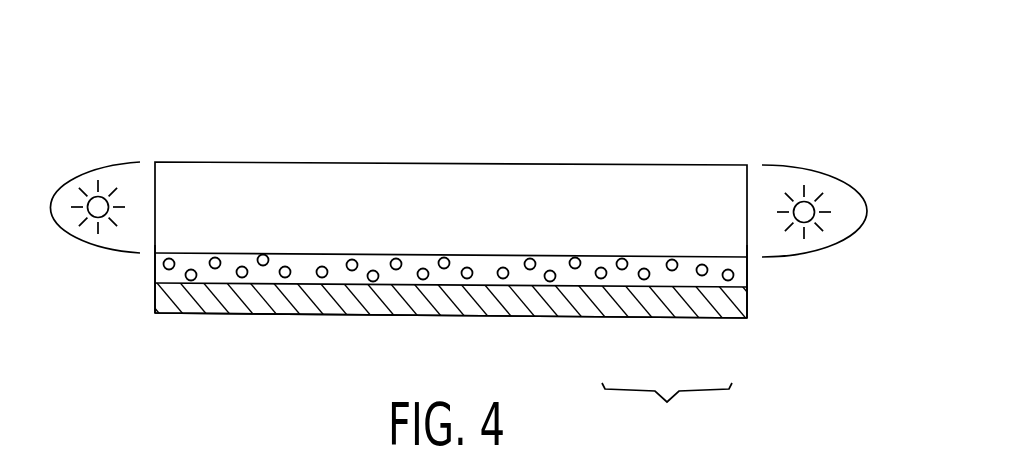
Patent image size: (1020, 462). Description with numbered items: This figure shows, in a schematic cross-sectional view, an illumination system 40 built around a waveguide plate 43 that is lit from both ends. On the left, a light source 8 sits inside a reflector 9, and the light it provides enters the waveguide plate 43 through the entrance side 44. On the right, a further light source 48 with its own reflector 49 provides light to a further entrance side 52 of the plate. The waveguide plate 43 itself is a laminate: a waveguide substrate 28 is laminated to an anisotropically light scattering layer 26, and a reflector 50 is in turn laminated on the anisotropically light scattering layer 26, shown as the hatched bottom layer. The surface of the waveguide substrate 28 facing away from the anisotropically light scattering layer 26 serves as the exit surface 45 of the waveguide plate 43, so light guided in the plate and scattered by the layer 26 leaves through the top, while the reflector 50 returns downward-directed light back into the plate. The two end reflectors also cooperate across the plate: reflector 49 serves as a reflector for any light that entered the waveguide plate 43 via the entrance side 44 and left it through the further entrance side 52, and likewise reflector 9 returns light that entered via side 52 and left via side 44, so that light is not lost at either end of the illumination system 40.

The illumination system 40 is at (122, 114).
The exit surface 45 is at (262, 161).
The entrance side 44 is at (152, 240).
The further entrance side 52 is at (749, 248).
The anisotropically light scattering layer 26 is at (672, 280).
The waveguide substrate 28 is at (716, 247).
The reflector 50 is at (623, 302).
The waveguide plate 43 is at (667, 412).
The reflector 9 is at (55, 230).
The light source 8 is at (99, 226).
The reflector 49 is at (852, 238).
The further light source 48 is at (805, 230).